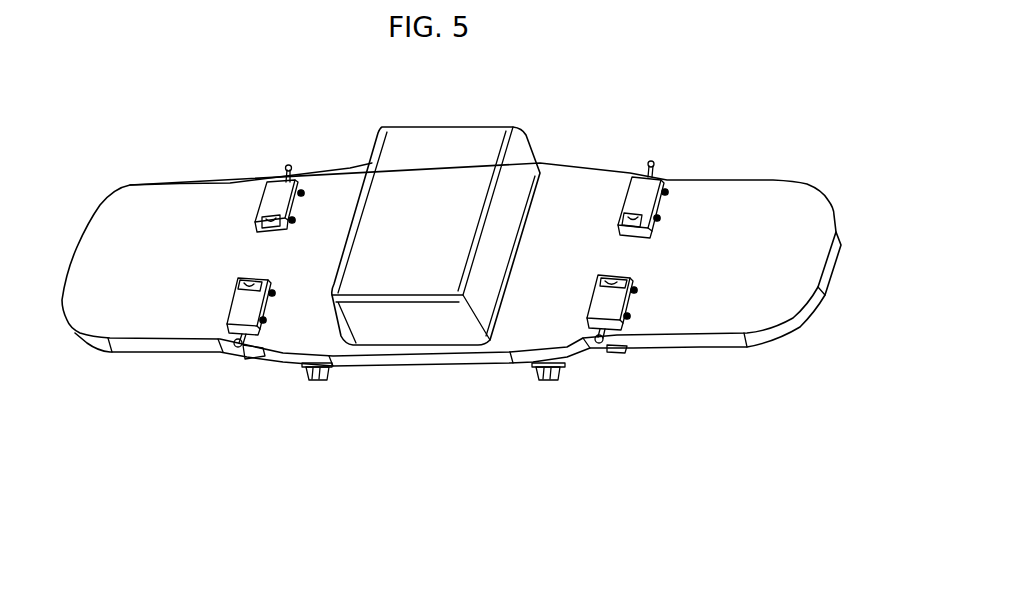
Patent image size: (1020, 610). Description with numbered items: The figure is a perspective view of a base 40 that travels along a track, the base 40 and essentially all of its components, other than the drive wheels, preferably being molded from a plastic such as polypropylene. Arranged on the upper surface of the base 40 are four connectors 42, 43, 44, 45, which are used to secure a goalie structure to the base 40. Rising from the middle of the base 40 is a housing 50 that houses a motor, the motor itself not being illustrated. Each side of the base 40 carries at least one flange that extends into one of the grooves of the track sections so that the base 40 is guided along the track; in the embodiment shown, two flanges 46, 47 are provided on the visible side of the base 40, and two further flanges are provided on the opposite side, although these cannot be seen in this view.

The base 40 is at (138, 440).
The connector 42 is at (661, 174).
The connector 43 is at (632, 303).
The connector 44 is at (232, 303).
The connector 45 is at (258, 205).
The flange 46 is at (325, 381).
The flange 47 is at (556, 378).
The housing 50 is at (475, 127).